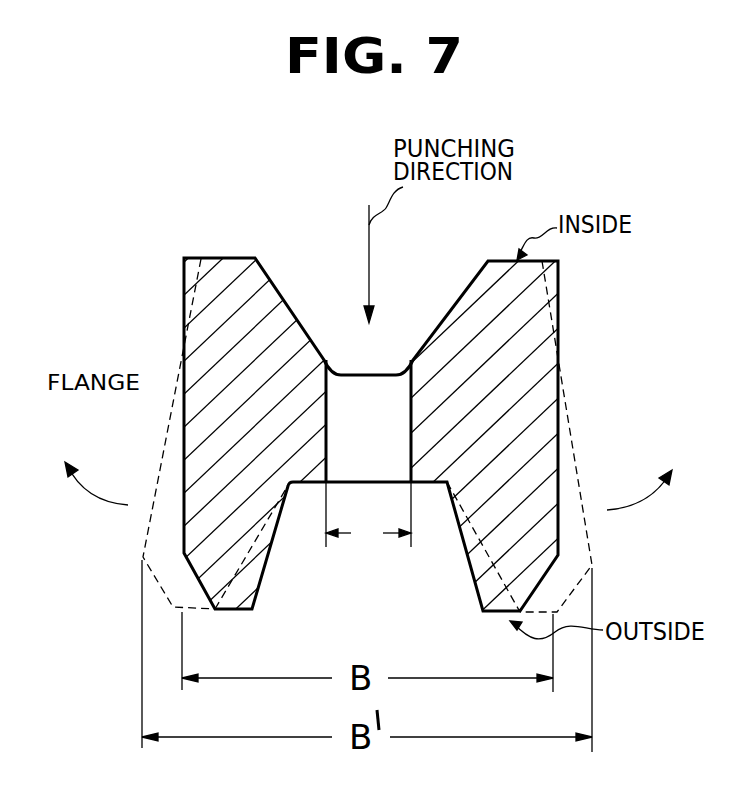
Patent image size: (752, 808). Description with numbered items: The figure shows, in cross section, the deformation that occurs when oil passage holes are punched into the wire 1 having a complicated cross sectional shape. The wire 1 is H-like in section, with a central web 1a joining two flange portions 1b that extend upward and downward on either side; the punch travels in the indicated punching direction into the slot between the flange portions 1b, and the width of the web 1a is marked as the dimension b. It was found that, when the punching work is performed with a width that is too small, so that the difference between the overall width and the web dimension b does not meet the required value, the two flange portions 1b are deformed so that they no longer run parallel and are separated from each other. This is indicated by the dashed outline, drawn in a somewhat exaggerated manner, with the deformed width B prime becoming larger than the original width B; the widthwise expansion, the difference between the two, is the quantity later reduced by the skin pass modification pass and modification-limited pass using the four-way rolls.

The wire 1 is at (214, 257).
The web 1a is at (307, 476).
The flange portion 1b is at (190, 410).